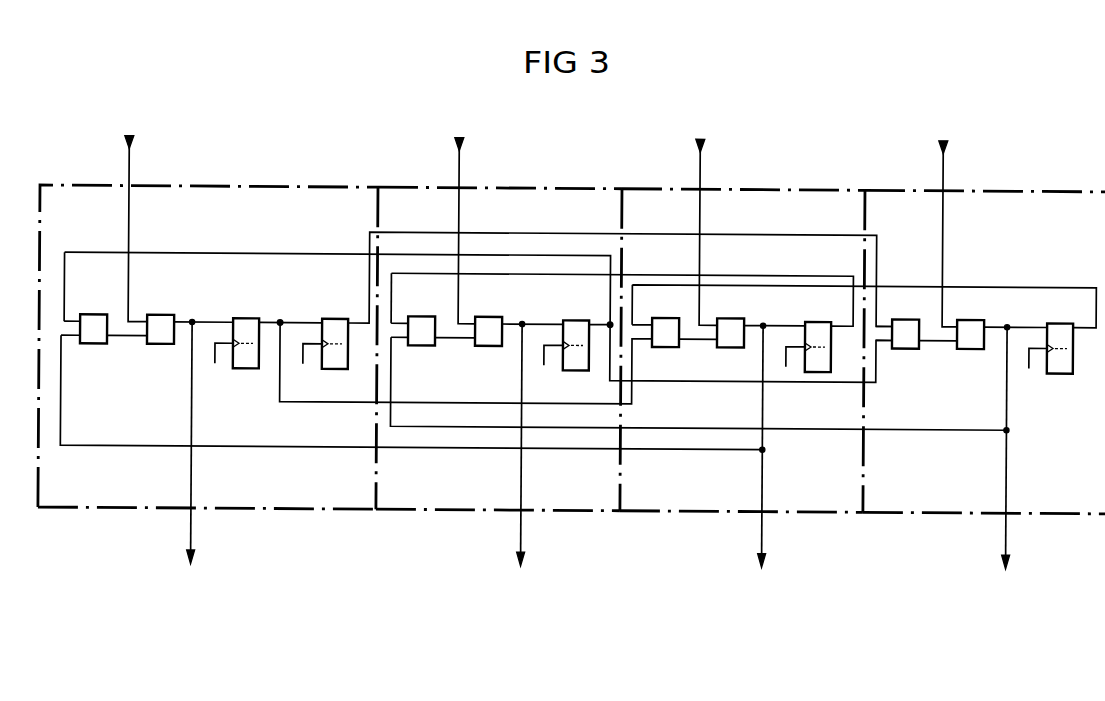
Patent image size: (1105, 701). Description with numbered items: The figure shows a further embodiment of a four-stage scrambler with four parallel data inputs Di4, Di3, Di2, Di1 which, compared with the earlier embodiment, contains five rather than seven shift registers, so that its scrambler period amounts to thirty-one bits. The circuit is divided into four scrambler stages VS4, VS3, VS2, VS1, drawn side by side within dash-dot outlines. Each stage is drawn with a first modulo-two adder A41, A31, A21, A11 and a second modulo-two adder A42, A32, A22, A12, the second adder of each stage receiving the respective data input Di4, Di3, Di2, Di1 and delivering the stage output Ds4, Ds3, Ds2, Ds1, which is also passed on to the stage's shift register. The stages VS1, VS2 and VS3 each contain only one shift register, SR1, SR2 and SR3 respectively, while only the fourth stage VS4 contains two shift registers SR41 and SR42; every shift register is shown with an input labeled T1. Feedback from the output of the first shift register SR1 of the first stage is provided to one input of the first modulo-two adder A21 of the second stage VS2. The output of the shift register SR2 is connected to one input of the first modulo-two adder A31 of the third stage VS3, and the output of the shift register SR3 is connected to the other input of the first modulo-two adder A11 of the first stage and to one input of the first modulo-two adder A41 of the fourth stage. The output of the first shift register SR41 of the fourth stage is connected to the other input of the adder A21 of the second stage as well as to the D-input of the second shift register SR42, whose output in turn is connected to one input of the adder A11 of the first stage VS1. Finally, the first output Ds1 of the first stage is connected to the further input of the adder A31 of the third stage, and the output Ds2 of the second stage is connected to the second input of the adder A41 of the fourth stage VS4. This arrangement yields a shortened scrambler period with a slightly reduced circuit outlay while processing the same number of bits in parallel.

The first modulo-2 adder of the fourth scrambler stage A41 is at (77, 297).
The exclusive-OR gate A42' A42 is at (145, 297).
The first shift register of the fourth scrambler stage SR41 is at (227, 297).
The second shift register of the fourth scrambler stage SR42 is at (317, 297).
The first modulo-2 adder of the third scrambler stage A31 is at (407, 297).
The exclusive-OR gate A32' A32 is at (471, 297).
The shift register of the third scrambler stage SR3 is at (559, 297).
The first modulo-2 adder of the second scrambler stage A21 is at (648, 297).
The exclusive-OR gate A22' A22 is at (715, 297).
The shift register of the second scrambler stage SR2 is at (801, 297).
The first modulo-2 adder of the first scrambler stage A11 is at (891, 297).
The exclusive-OR gate A12' A12 is at (954, 297).
The first shift register of the first scrambler stage SR1 is at (1044, 297).
The data input Di4 is at (130, 214).
The data input Di3 is at (459, 217).
The data input Di2 is at (702, 217).
The data input Di1 is at (945, 219).
The data output Ds4' Ds4 is at (193, 457).
The data output Ds3' Ds3 is at (524, 458).
The output of the second scrambler stage Ds2 is at (763, 460).
The first output of the first scrambler stage Ds1 is at (1010, 461).
The fourth scrambler stage VS4 is at (208, 347).
The third scrambler stage VS3 is at (499, 349).
The second scrambler stage VS2 is at (742, 351).
The first scrambler stage VS1 is at (984, 352).
The clock signal T1 is at (626, 368).